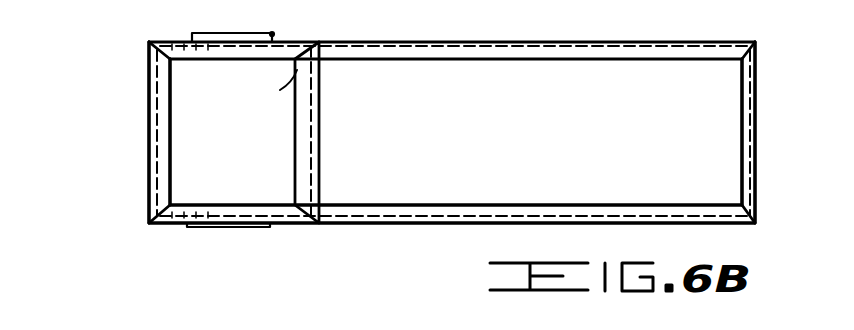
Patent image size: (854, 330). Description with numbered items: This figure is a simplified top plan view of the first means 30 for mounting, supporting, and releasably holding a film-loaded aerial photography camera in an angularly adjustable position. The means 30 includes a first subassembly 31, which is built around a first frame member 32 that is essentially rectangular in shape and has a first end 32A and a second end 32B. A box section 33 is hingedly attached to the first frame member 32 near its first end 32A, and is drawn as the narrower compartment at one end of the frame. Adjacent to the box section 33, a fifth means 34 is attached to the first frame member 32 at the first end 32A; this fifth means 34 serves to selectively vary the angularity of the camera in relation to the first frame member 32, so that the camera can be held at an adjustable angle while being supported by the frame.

The first means for mounting, supporting, and releasably holding the camera 30 is at (124, 60).
The first subassembly 31 is at (603, 45).
The first frame member 32 is at (157, 152).
The first end of the first frame member 32A is at (150, 104).
The second end of the first frame member 32B is at (757, 85).
The box section 33 is at (275, 59).
The fifth means for selectively varying the angularity of the camera 34 is at (212, 35).